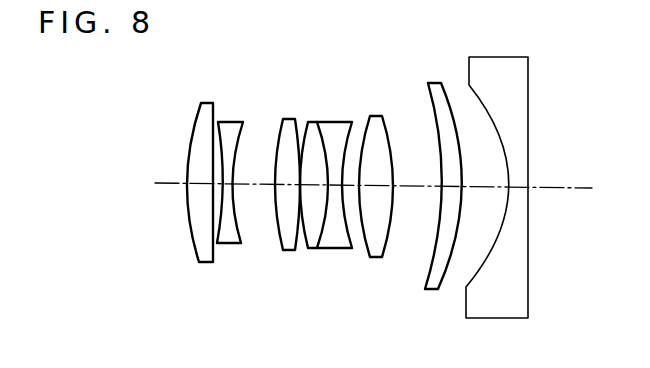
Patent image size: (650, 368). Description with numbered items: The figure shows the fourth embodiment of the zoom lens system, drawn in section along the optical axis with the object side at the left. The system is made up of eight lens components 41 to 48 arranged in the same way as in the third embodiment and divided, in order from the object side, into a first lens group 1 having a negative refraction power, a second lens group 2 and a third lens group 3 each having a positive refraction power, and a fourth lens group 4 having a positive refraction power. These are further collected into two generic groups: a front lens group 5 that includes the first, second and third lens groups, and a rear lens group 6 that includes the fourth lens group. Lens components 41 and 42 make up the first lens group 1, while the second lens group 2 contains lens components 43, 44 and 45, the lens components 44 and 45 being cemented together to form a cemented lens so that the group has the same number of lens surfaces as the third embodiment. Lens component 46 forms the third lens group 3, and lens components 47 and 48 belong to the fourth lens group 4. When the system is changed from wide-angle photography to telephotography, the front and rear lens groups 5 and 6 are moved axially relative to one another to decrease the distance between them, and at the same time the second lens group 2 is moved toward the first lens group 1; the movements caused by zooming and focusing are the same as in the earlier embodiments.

The first lens group 1 is at (192, 96).
The second lens group 2 is at (355, 103).
The third lens group 3 is at (390, 104).
The fourth lens group 4 is at (425, 53).
The front lens group 5 is at (202, 65).
The rear lens group 6 is at (463, 20).
The lens component 41 is at (203, 263).
The lens component 42 is at (230, 245).
The lens component 43 is at (286, 252).
The lens component 44 is at (310, 250).
The lens component 45 is at (335, 250).
The lens component 46 is at (376, 259).
The lens component 47 is at (430, 290).
The lens component 48 is at (528, 312).